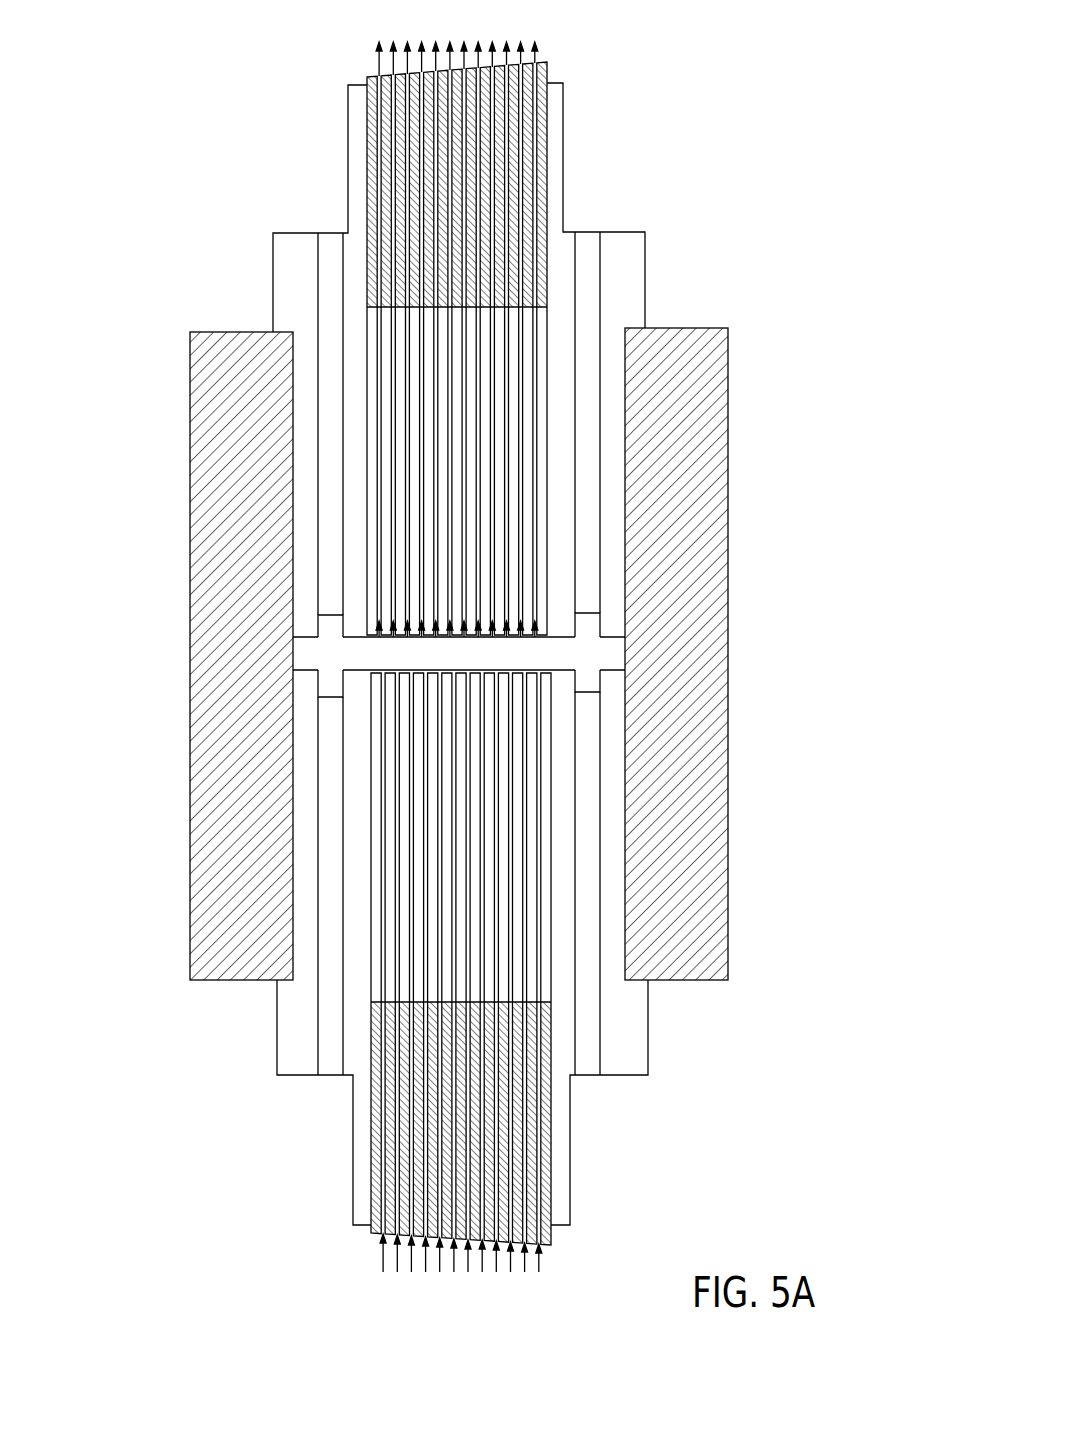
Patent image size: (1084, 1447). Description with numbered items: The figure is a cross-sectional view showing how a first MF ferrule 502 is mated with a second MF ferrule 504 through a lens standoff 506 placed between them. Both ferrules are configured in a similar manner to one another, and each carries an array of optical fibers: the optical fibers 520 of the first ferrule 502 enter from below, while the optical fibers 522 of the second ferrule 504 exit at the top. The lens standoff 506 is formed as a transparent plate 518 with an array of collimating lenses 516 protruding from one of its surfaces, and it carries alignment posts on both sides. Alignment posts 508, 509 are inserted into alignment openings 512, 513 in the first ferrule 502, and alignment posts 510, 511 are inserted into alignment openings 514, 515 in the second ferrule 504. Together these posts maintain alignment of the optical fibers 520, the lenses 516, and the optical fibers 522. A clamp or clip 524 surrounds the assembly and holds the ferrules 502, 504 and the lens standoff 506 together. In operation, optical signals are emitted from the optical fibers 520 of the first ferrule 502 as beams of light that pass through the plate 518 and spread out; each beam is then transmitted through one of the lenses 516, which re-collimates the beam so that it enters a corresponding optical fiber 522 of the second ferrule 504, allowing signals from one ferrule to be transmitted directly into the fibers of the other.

The first MF ferrule 502 is at (692, 1027).
The second MF ferrule 504 is at (675, 192).
The lens standoff 506 is at (640, 628).
The alignment post 508 is at (320, 693).
The alignment post 509 is at (602, 690).
The alignment post 510 is at (327, 627).
The alignment post 511 is at (593, 620).
The alignment opening 512 is at (333, 1070).
The alignment opening 513 is at (592, 1070).
The alignment opening 514 is at (328, 238).
The alignment opening 515 is at (585, 238).
The collimating lenses 516 is at (385, 640).
The transparent plate 518 is at (300, 660).
The optical fibers 520 is at (418, 1283).
The optical fibers 522 is at (419, 38).
The clamp or clip 524 is at (210, 942).